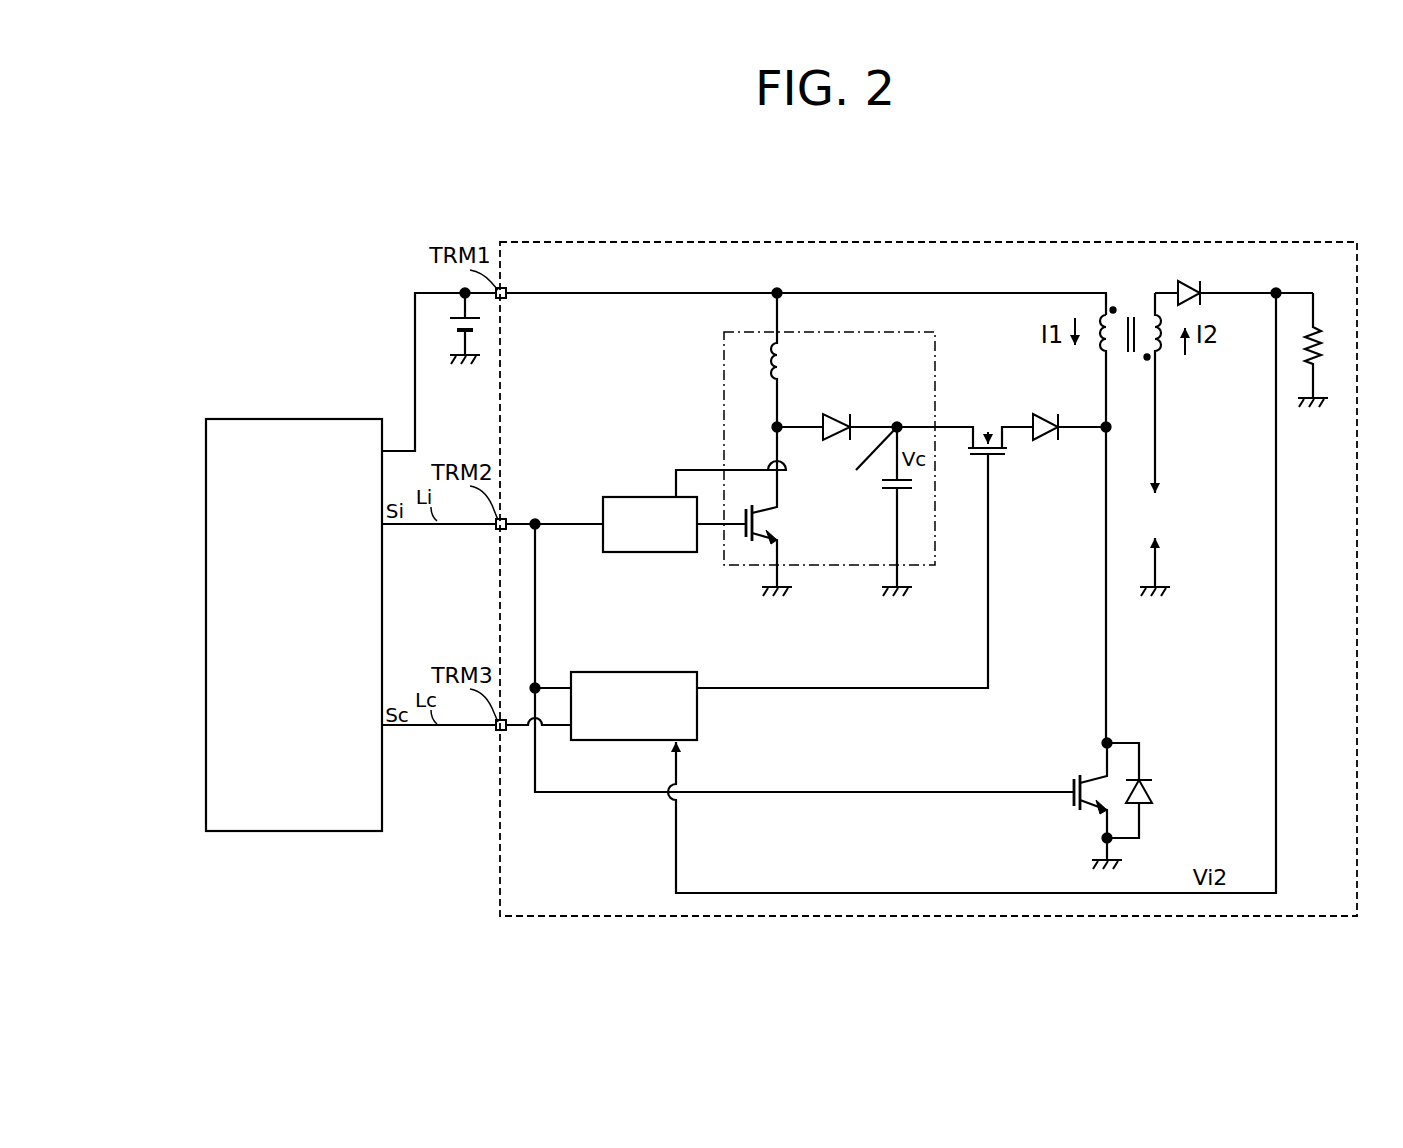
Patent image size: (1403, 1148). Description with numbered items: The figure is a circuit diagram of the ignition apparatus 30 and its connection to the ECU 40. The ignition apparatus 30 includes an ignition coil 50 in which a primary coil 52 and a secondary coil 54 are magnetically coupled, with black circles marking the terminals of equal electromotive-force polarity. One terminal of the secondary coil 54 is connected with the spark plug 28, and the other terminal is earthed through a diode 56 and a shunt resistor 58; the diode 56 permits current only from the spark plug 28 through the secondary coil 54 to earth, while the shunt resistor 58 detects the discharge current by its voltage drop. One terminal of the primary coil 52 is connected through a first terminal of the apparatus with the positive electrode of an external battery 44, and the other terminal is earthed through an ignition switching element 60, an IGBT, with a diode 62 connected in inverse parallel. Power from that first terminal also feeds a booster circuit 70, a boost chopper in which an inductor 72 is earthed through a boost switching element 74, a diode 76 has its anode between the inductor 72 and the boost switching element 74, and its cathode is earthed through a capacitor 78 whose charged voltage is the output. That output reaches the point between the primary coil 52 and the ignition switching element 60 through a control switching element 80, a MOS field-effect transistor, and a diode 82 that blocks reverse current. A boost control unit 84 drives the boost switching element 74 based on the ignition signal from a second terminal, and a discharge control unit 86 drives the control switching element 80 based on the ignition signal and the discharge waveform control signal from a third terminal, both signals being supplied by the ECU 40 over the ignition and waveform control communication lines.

The spark plug 28 is at (1170, 515).
The ignition apparatus 30 is at (1279, 237).
The ECU 40 is at (269, 418).
The external battery 44 is at (460, 313).
The ignition coil 50 is at (1145, 493).
The primary coil 52 is at (1109, 350).
The secondary coil 54 is at (1163, 350).
The diode 56 is at (1192, 290).
The shunt resistor 58 is at (1318, 328).
The ignition switching element 60 is at (1090, 778).
The diode 62 is at (1154, 792).
The booster circuit 70 is at (878, 332).
The inductor 72 is at (788, 360).
The boost switching element 74 is at (780, 518).
The diode 76 is at (840, 413).
The capacitor 78 is at (882, 478).
The control switching element 80 is at (994, 455).
The diode 82 is at (1045, 440).
The boost control unit 84 is at (647, 497).
The discharge control unit 86 is at (647, 672).